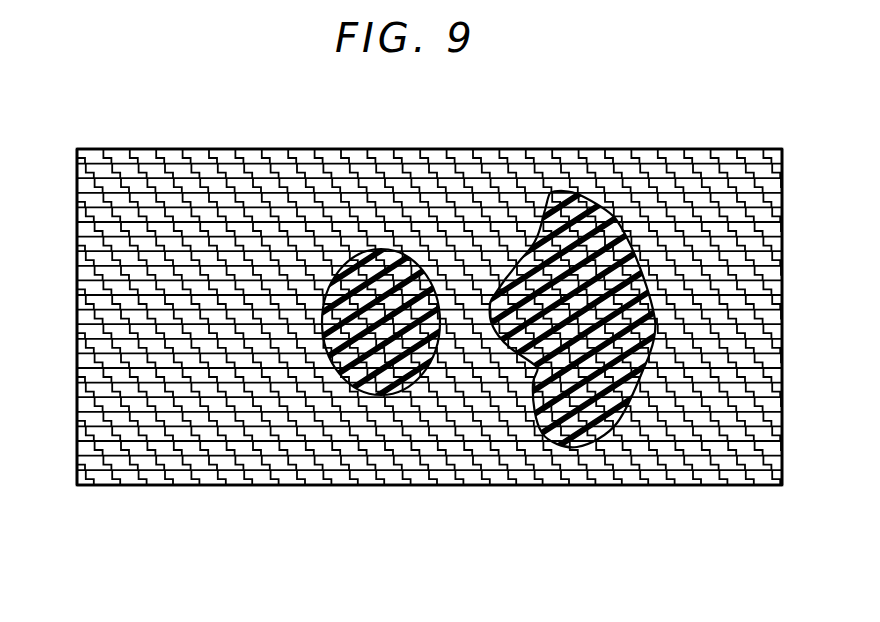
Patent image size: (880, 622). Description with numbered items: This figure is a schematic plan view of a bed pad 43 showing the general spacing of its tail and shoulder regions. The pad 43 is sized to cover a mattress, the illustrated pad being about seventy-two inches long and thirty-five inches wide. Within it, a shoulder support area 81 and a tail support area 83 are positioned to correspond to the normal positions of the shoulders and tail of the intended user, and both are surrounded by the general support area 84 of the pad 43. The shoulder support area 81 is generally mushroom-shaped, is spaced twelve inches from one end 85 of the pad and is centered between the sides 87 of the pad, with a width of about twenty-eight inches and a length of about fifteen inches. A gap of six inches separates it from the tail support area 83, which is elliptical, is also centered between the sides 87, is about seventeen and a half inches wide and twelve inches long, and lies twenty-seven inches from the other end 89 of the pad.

The bed pad 43 is at (714, 149).
The shoulder support area 81 is at (592, 203).
The tail support area 83 is at (384, 250).
The general support area 84 is at (268, 188).
The one end 85 is at (782, 312).
The sides 87 is at (345, 150).
The other end 89 is at (77, 350).